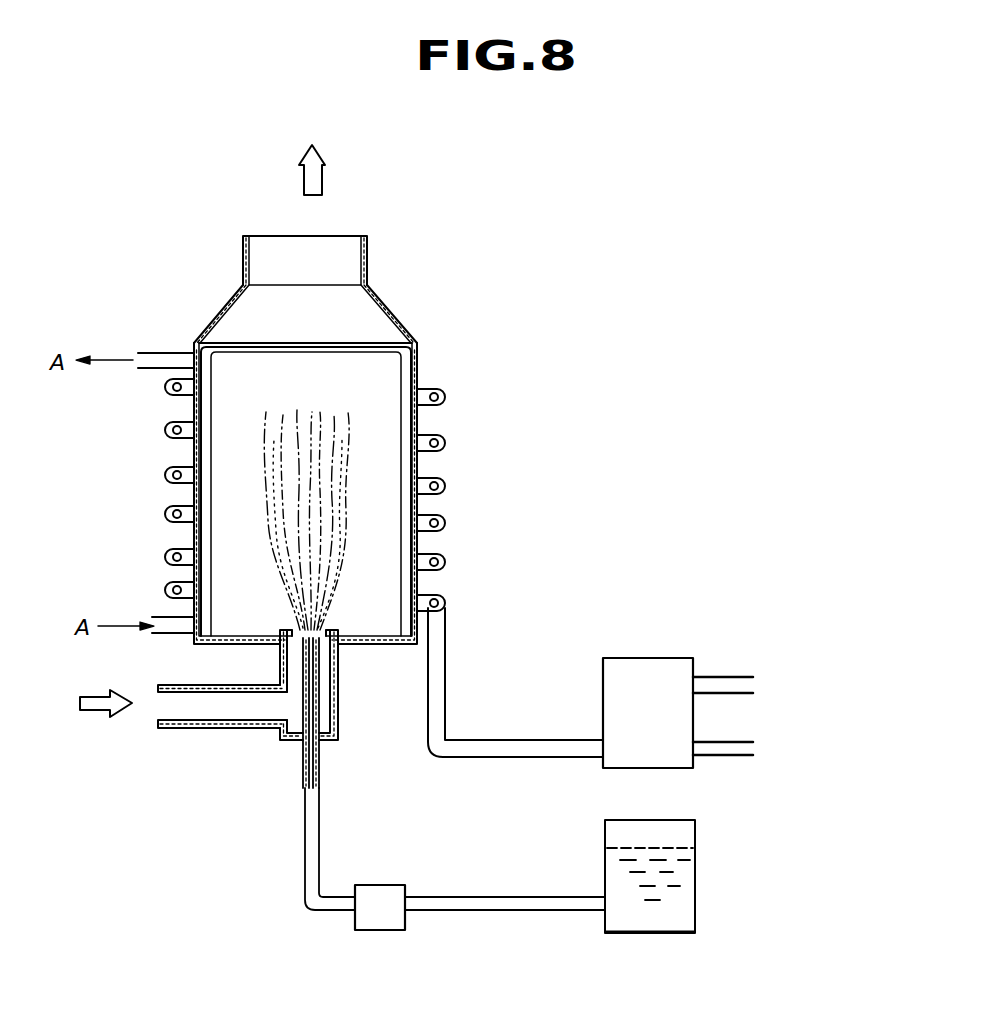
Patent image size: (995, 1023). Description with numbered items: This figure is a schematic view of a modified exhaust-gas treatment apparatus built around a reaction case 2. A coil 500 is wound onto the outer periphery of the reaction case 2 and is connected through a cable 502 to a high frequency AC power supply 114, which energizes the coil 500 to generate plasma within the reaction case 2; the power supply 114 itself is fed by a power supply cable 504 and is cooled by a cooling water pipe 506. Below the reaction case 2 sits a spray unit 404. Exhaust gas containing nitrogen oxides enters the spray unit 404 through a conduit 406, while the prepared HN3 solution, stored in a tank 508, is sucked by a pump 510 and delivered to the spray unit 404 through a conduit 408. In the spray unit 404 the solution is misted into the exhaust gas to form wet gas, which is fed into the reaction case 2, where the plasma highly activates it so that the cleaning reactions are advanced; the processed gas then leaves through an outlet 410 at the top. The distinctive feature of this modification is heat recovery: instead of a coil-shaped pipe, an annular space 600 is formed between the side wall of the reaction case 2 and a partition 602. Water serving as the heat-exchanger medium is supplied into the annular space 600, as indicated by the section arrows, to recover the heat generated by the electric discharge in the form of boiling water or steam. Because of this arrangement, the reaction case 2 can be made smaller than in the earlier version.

The reaction case 2 is at (418, 360).
The outlet 410 is at (342, 236).
The partition 602 is at (214, 388).
The annular space 600 is at (188, 540).
The coil 500 is at (448, 563).
The cable 502 is at (442, 680).
The high frequency AC power supply 114 is at (642, 658).
The power supply cable 504 is at (728, 677).
The cooling water pipe 506 is at (732, 757).
The spray unit 404 is at (328, 688).
The conduit 406 is at (197, 728).
The conduit 408 is at (318, 783).
The pump 510 is at (388, 932).
The tank 508 is at (657, 925).